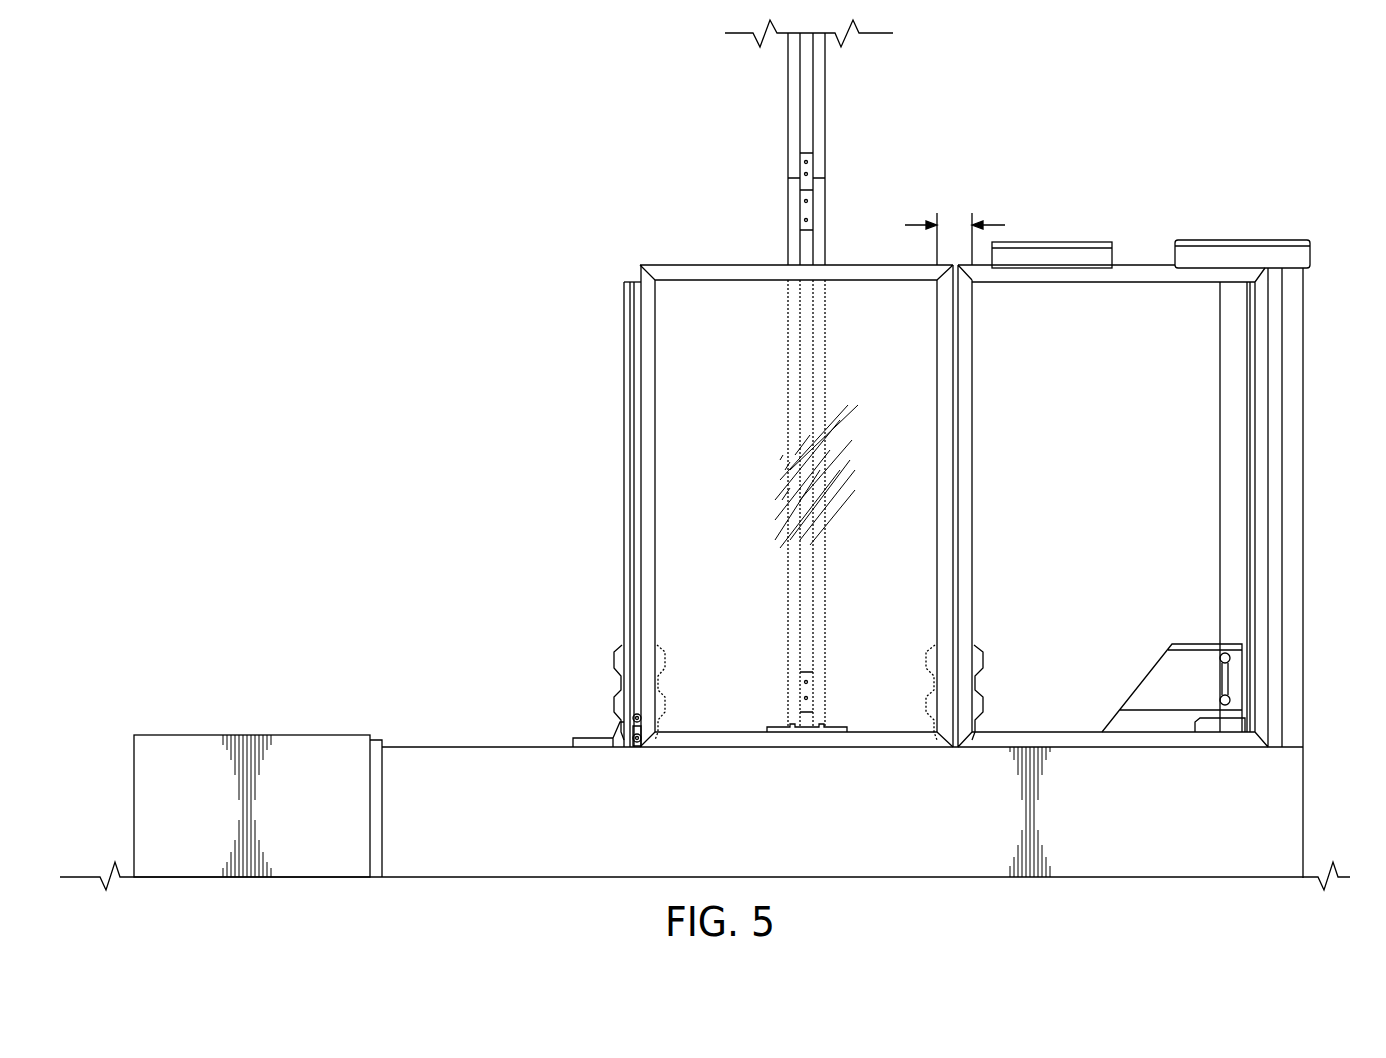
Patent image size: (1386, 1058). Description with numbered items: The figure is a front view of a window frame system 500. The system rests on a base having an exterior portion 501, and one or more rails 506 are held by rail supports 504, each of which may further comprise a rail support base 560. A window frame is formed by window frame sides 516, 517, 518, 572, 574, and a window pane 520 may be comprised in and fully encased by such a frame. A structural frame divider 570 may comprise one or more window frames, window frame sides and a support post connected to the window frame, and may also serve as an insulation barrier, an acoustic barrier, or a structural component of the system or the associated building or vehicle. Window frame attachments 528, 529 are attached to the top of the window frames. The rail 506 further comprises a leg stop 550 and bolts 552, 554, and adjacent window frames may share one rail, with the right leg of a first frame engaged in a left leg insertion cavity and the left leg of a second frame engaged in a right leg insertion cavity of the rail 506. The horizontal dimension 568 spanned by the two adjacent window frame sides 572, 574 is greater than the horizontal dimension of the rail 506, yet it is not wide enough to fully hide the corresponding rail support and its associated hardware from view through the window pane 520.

The window frame system 500 is at (447, 162).
The exterior portion 501 is at (430, 746).
The rail support 504 is at (617, 667).
The rail 506 is at (626, 296).
The window frame side 516 is at (648, 376).
The window frame side 517 is at (850, 751).
The window frame side 518 is at (681, 270).
The window pane 520 is at (898, 611).
The window frame attachment 528 is at (1052, 242).
The window frame attachment 529 is at (1240, 240).
The leg stop 550 is at (641, 738).
The bolt 552 is at (634, 746).
The bolt 554 is at (642, 718).
The rail support base 560 is at (585, 737).
The horizontal dimension 568 is at (915, 222).
The structural frame divider 570 is at (803, 246).
The window frame side 572 is at (942, 383).
The window frame side 574 is at (968, 383).